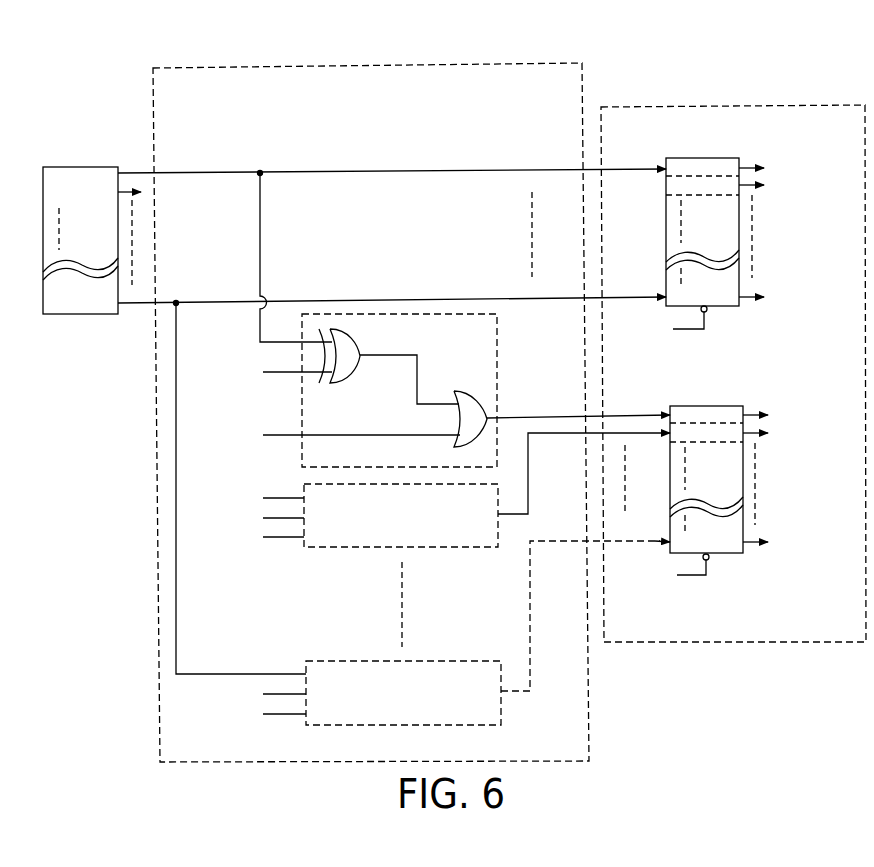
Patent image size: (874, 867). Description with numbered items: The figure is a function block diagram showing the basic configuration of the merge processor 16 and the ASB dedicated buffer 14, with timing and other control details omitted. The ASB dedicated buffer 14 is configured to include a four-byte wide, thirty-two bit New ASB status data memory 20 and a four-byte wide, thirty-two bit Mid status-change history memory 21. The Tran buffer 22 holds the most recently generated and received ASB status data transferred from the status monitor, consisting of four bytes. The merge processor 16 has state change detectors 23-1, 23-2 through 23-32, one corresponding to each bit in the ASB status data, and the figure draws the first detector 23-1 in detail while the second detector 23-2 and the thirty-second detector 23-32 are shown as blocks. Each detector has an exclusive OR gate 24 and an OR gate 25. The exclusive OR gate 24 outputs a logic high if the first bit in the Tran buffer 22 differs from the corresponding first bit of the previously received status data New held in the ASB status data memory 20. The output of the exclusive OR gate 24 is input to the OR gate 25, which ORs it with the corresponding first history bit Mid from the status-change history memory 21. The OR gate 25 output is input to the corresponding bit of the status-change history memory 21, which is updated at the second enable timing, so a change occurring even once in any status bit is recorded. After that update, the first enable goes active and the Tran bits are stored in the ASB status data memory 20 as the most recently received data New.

The ASB dedicated buffer 14 is at (820, 105).
The merge processor 16 is at (582, 63).
The ASB status data memory 20 is at (754, 138).
The status-change history memory 21 is at (758, 386).
The Tran buffer 22 is at (82, 314).
The state change detector 23-1 is at (437, 390).
The state change detector 23-2 is at (450, 548).
The state change detector 23-32 is at (467, 662).
The exclusive OR gate 24 is at (362, 338).
The OR gate 25 is at (478, 395).